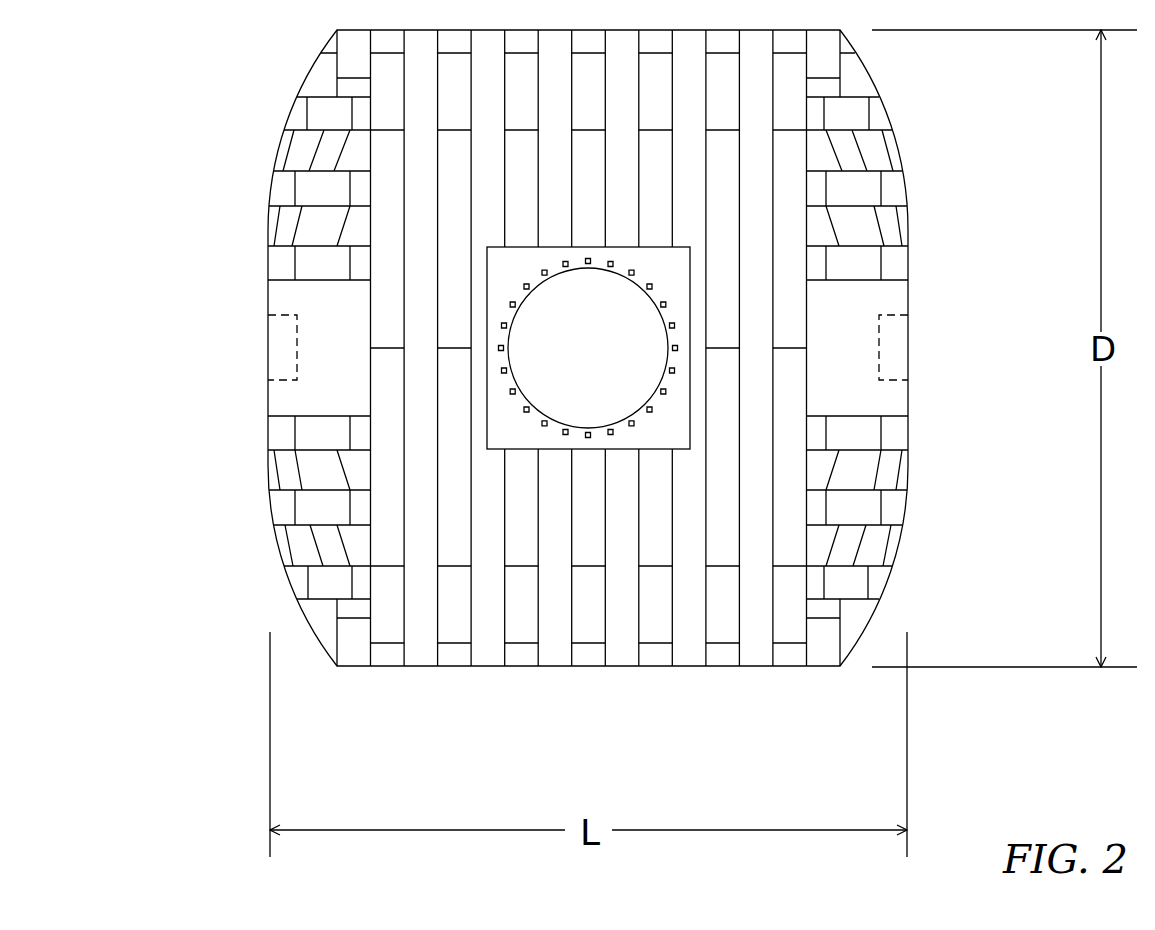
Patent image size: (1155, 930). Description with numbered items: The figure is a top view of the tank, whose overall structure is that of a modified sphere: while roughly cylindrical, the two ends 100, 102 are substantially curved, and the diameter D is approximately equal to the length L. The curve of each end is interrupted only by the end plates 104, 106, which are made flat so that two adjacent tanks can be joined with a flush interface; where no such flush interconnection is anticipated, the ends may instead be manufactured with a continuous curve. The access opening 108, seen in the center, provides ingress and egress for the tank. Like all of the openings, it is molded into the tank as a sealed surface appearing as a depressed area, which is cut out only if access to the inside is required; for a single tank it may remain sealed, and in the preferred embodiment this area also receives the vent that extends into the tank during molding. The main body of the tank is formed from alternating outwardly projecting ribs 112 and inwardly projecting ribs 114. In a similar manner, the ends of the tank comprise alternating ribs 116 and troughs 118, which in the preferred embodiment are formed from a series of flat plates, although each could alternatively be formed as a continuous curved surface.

The end 100 is at (298, 75).
The end 102 is at (890, 103).
The end plate 104 is at (268, 365).
The end plate 106 is at (908, 362).
The access opening 108 is at (670, 336).
The outwardly projecting ribs 112 is at (623, 667).
The inwardly projecting ribs 114 is at (385, 667).
The ribs 116 is at (300, 616).
The troughs 118 is at (288, 117).